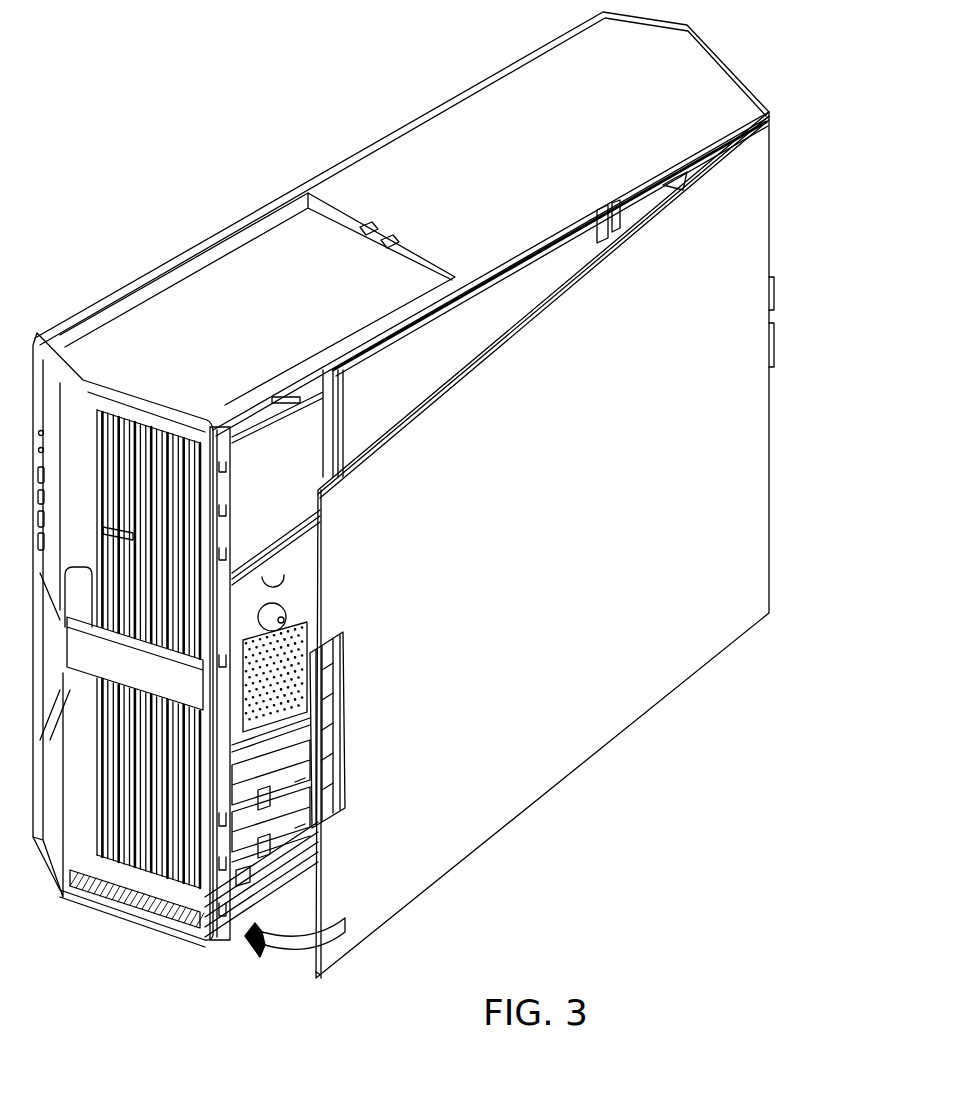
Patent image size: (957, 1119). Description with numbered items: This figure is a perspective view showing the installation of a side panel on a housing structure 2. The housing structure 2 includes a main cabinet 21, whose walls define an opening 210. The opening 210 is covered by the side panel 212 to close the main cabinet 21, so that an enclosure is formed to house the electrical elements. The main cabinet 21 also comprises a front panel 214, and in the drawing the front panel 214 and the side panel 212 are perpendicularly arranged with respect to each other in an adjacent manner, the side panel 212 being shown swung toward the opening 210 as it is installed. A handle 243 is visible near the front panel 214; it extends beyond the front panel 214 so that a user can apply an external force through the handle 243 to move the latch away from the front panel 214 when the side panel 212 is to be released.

The housing structure 2 is at (152, 34).
The main cabinet 21 is at (405, 157).
The opening 210 is at (483, 316).
The side panel 212 is at (573, 745).
The front panel 214 is at (218, 452).
The handle 243 is at (333, 768).